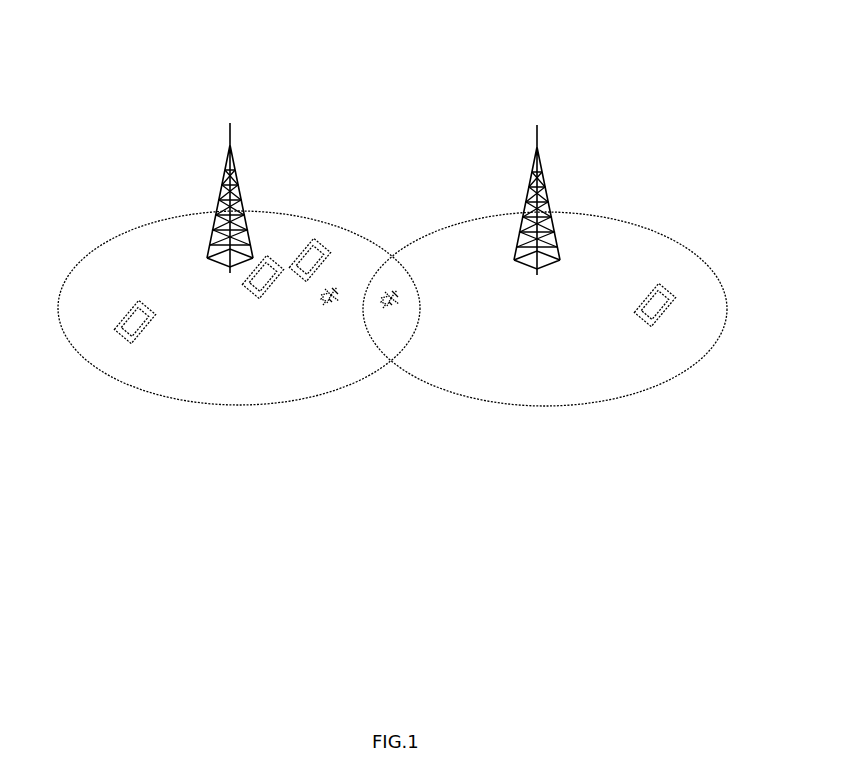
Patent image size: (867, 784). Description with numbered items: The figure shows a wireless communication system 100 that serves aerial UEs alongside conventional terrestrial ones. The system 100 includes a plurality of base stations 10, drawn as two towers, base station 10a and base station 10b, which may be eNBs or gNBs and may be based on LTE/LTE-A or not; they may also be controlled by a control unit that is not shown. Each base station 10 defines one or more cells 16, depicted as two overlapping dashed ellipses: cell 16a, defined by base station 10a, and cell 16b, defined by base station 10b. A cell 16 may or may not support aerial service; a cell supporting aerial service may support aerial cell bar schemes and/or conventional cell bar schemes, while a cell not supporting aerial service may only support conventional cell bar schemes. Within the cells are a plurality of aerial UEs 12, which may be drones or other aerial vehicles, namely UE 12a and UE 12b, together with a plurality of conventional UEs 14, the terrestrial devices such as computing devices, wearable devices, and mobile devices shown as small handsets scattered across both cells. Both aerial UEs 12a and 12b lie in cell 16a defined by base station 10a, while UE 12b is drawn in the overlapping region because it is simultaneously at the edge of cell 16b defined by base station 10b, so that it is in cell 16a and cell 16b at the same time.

The wireless communication system 100 is at (560, 78).
The base stations 10 is at (385, 196).
The base station 10a is at (213, 213).
The base station 10b is at (545, 188).
The aerial UEs 12 is at (383, 367).
The UE 12a is at (333, 310).
The UE 12b is at (390, 305).
The conventional UEs 14 is at (123, 335).
The cells 16 is at (335, 229).
The cell 16a is at (193, 395).
The cell 16b is at (545, 395).